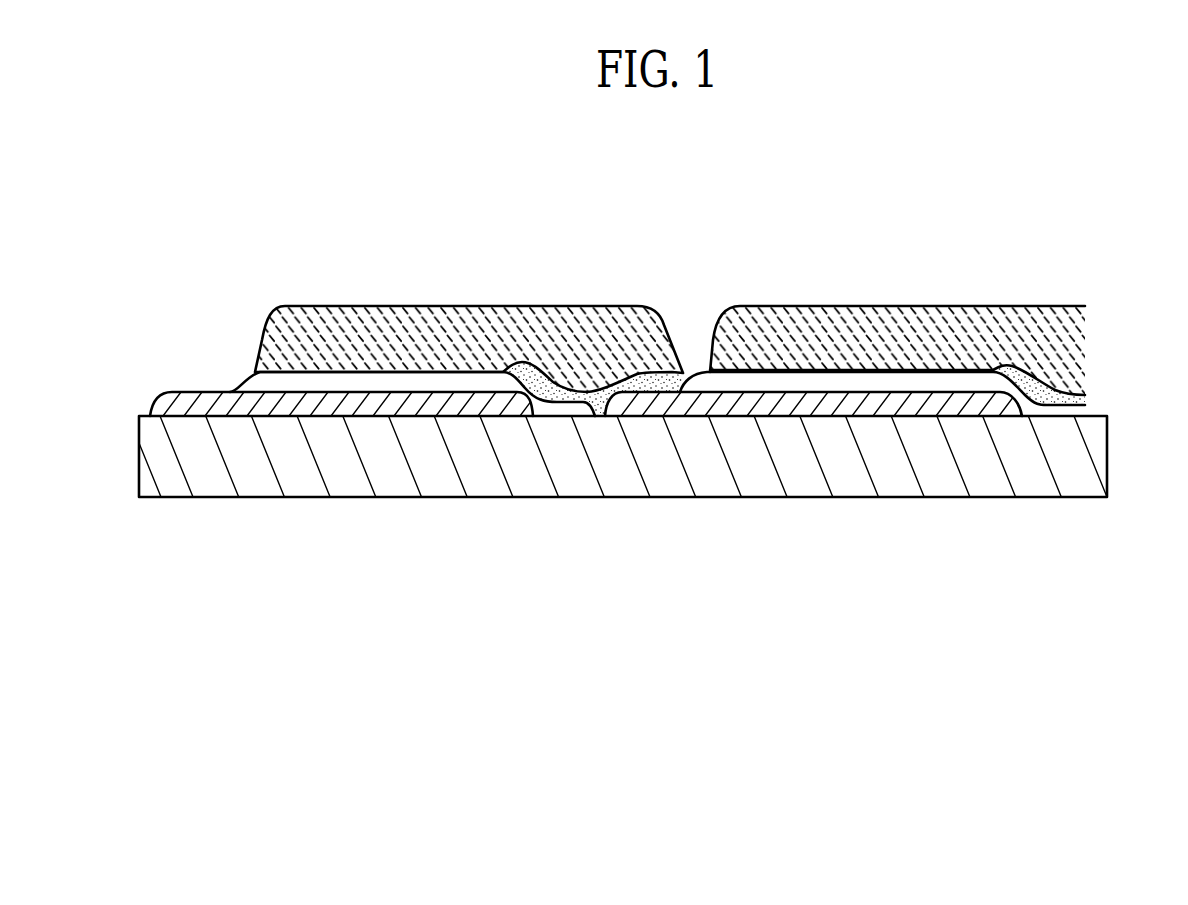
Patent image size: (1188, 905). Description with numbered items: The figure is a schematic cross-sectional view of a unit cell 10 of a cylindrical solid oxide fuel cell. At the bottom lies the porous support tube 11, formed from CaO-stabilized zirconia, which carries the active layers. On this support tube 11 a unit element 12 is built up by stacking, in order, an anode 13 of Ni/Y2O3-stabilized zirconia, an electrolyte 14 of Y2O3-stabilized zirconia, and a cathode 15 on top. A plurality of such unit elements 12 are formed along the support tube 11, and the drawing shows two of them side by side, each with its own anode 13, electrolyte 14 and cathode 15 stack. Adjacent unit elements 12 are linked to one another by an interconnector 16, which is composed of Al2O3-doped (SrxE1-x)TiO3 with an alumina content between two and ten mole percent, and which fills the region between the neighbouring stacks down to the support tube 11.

The unit cell 10 is at (1088, 612).
The porous support tube 11 is at (1107, 467).
The unit element 12 is at (290, 257).
The anode 13 is at (202, 402).
The electrolyte 14 is at (245, 384).
The cathode 15 is at (273, 323).
The interconnector 16 is at (647, 382).